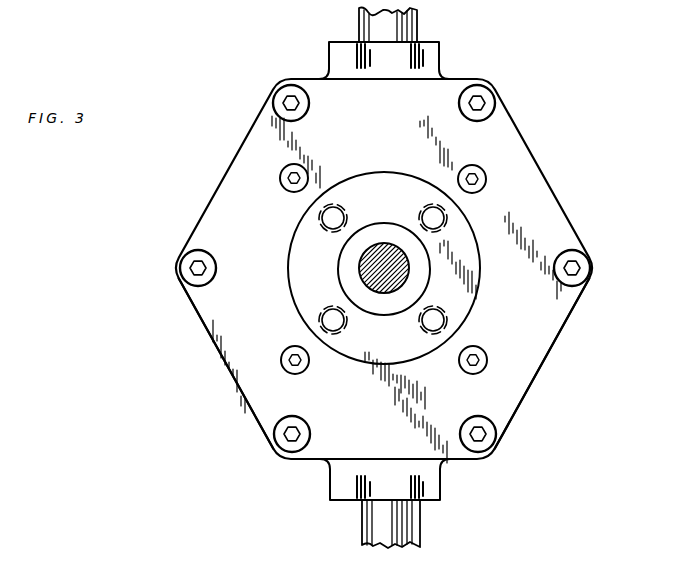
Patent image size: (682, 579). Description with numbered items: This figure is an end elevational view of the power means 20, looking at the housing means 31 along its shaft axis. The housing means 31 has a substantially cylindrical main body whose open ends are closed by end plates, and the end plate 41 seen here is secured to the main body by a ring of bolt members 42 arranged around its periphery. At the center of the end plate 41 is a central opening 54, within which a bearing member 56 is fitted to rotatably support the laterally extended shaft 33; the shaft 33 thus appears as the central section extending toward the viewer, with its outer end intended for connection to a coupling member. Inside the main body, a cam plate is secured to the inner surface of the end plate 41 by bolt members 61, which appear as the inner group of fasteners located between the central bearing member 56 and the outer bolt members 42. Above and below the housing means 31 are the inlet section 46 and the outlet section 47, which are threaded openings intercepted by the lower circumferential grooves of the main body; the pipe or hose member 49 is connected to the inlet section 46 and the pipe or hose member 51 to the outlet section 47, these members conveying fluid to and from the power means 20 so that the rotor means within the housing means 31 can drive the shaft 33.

The power means 20 is at (527, 92).
The housing means 31 is at (238, 392).
The shaft 33 is at (403, 252).
The end plate 41 is at (510, 395).
The bolt members 42 is at (576, 270).
The inlet section 46 is at (425, 60).
The outlet section 47 is at (430, 471).
The pipe or hose member 49 is at (400, 27).
The pipe or hose member 51 is at (375, 517).
The central opening 54 is at (346, 273).
The bearing members 56 is at (420, 277).
The bolt members 61 is at (300, 175).